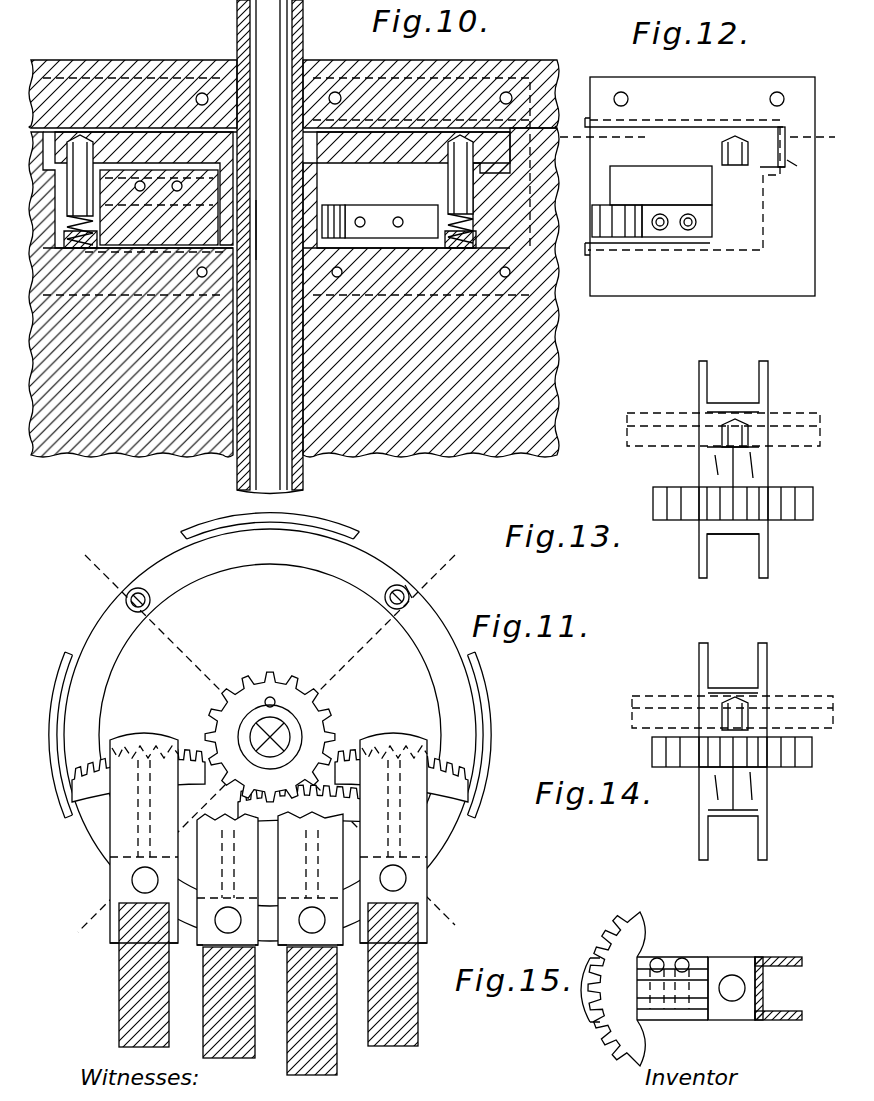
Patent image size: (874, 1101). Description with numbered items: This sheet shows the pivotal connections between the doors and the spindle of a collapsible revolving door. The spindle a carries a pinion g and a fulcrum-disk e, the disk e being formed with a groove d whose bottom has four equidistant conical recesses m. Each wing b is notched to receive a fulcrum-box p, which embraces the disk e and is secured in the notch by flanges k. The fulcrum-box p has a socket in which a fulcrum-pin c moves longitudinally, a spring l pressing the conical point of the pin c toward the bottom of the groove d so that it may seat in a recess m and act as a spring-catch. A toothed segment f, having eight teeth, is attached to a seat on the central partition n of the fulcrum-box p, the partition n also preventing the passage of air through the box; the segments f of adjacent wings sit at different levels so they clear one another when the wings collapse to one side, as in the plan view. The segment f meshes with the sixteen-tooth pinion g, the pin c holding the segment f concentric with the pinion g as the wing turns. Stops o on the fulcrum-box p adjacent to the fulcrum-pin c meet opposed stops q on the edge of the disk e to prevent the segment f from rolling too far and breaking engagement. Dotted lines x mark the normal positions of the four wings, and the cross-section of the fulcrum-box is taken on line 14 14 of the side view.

In FIG. 10, the spindle a is at (237, 20).
In FIG. 11, the spindle a is at (258, 702).
In FIG. 11, the wings b is at (118, 1004).
In FIG. 10, the fulcrum-pin c is at (80, 191).
In FIG. 12, the fulcrum-pin c is at (720, 150).
In FIG. 15, the fulcrum-pin c is at (735, 975).
In FIG. 11, the fulcrum-pin c is at (455, 880).
In FIG. 11, the groove d is at (270, 735).
In FIG. 10, the disk e is at (410, 132).
In FIG. 13, the disk e is at (650, 413).
In FIG. 14, the disk e is at (667, 696).
In FIG. 11, the disk e is at (412, 598).
In FIG. 10, the toothed segment f is at (290, 230).
In FIG. 12, the toothed segment f is at (598, 205).
In FIG. 13, the toothed segment f is at (653, 499).
In FIG. 14, the toothed segment f is at (652, 751).
In FIG. 15, the toothed segment f is at (606, 926).
In FIG. 11, the toothed segment f is at (72, 765).
In FIG. 10, the pinion g is at (330, 184).
In FIG. 11, the pinion g is at (275, 674).
In FIG. 10, the flanges k is at (168, 298).
In FIG. 12, the flanges k is at (680, 298).
In FIG. 13, the flanges k is at (751, 471).
In FIG. 15, the flanges k is at (784, 957).
In FIG. 10, the spring l is at (138, 268).
In FIG. 10, the conical recesses m is at (458, 136).
In FIG. 11, the conical recesses m is at (126, 600).
In FIG. 10, the central partition n is at (269, 207).
In FIG. 12, the central partition n is at (661, 185).
In FIG. 13, the central partition n is at (745, 470).
In FIG. 14, the central partition n is at (740, 790).
In FIG. 15, the central partition n is at (698, 1000).
In FIG. 11, the stops o is at (112, 928).
In FIG. 10, the fulcrum-box p is at (158, 252).
In FIG. 12, the fulcrum-box p is at (680, 250).
In FIG. 13, the fulcrum-box p is at (738, 540).
In FIG. 15, the fulcrum-box p is at (763, 988).
In FIG. 11, the fulcrum-box p is at (110, 872).
In FIG. 11, the opposed stops q is at (188, 536).
In FIG. 11, the dotted lines x is at (260, 744).
In FIG. 12, the section line 14 14 is at (702, 139).